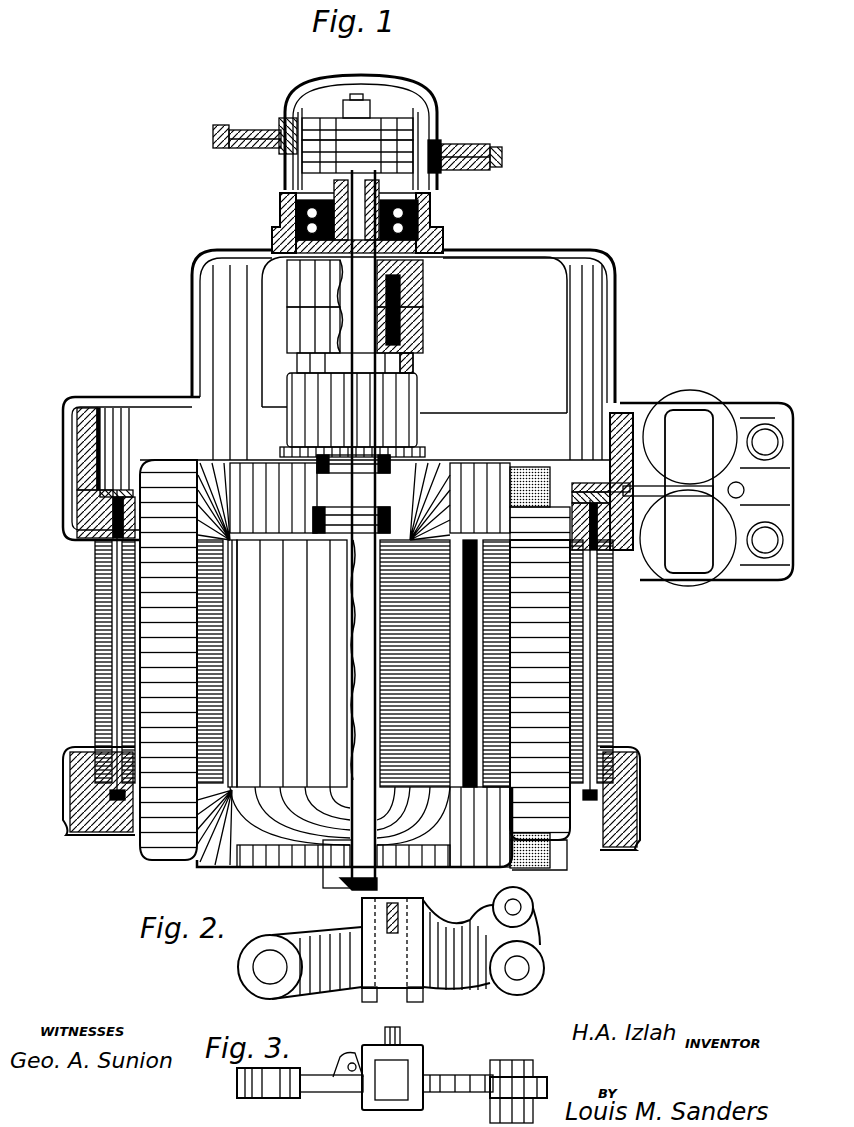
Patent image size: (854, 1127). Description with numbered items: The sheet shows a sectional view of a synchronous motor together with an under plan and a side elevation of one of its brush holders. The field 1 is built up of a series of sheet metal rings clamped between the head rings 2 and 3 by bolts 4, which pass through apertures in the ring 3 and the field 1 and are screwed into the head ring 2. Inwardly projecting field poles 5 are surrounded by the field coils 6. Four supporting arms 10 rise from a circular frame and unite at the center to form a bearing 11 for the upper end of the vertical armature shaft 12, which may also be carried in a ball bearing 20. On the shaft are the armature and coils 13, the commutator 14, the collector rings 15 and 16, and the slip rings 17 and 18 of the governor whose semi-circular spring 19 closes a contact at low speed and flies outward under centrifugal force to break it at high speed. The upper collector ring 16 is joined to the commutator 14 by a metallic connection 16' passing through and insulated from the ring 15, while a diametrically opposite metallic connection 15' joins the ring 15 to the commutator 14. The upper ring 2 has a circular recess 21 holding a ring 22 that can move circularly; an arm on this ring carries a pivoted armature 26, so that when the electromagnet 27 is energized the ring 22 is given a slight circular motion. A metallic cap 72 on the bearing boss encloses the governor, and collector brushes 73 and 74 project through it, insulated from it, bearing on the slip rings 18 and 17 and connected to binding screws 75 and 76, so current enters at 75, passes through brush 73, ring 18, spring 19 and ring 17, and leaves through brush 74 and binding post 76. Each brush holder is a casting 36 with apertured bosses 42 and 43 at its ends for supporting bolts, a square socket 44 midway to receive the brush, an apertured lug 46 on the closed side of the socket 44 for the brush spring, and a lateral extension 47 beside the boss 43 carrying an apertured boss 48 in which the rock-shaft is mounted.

In FIG. 1, the field 1 is at (93, 632).
In FIG. 1, the head ring 2 is at (67, 538).
In FIG. 1, the head ring 3 is at (62, 760).
In FIG. 1, the bolts 4 is at (93, 677).
In FIG. 1, the field poles 5 is at (190, 707).
In FIG. 1, the field coils 6 is at (143, 592).
In FIG. 1, the supporting arms 10 is at (250, 285).
In FIG. 1, the bearing 11 is at (443, 230).
In FIG. 1, the armature shaft 12 is at (323, 873).
In FIG. 1, the armature and coils 13 is at (353, 663).
In FIG. 1, the commutator 14 is at (420, 392).
In FIG. 1, the collector ring 15 is at (373, 306).
In FIG. 1, the metallic connection 15' is at (338, 363).
In FIG. 1, the collector ring 16 is at (418, 302).
In FIG. 1, the metallic connection 16' is at (424, 362).
In FIG. 1, the slip ring 17 is at (357, 145).
In FIG. 1, the slip ring 18 is at (357, 117).
In FIG. 1, the governor spring 19 is at (392, 118).
In FIG. 1, the ball bearing 20 is at (280, 220).
In FIG. 1, the circular recess 21 is at (97, 493).
In FIG. 1, the ring 22 is at (90, 477).
In FIG. 1, the armature 26 is at (668, 491).
In FIG. 1, the electromagnet 27 is at (697, 390).
In FIG. 2, the casting 36 is at (458, 943).
In FIG. 2, the apertured boss 42 is at (238, 972).
In FIG. 3, the apertured boss 42 is at (257, 1098).
In FIG. 2, the apertured boss 43 is at (545, 968).
In FIG. 3, the apertured boss 43 is at (547, 1087).
In FIG. 2, the square socket 44 is at (403, 907).
In FIG. 3, the square socket 44 is at (408, 1058).
In FIG. 2, the apertured lug 46 is at (389, 932).
In FIG. 3, the apertured lug 46 is at (399, 1030).
In FIG. 2, the lateral extension 47 is at (530, 932).
In FIG. 2, the apertured boss 48 is at (527, 900).
In FIG. 3, the apertured boss 48 is at (520, 1060).
In FIG. 1, the metallic cap 72 is at (375, 77).
In FIG. 1, the collector brush 73 is at (280, 120).
In FIG. 1, the collector brush 74 is at (436, 140).
In FIG. 1, the binding screw 75 is at (223, 124).
In FIG. 1, the binding screw 76 is at (480, 143).
In FIG. 1, the terminal end G' is at (511, 158).